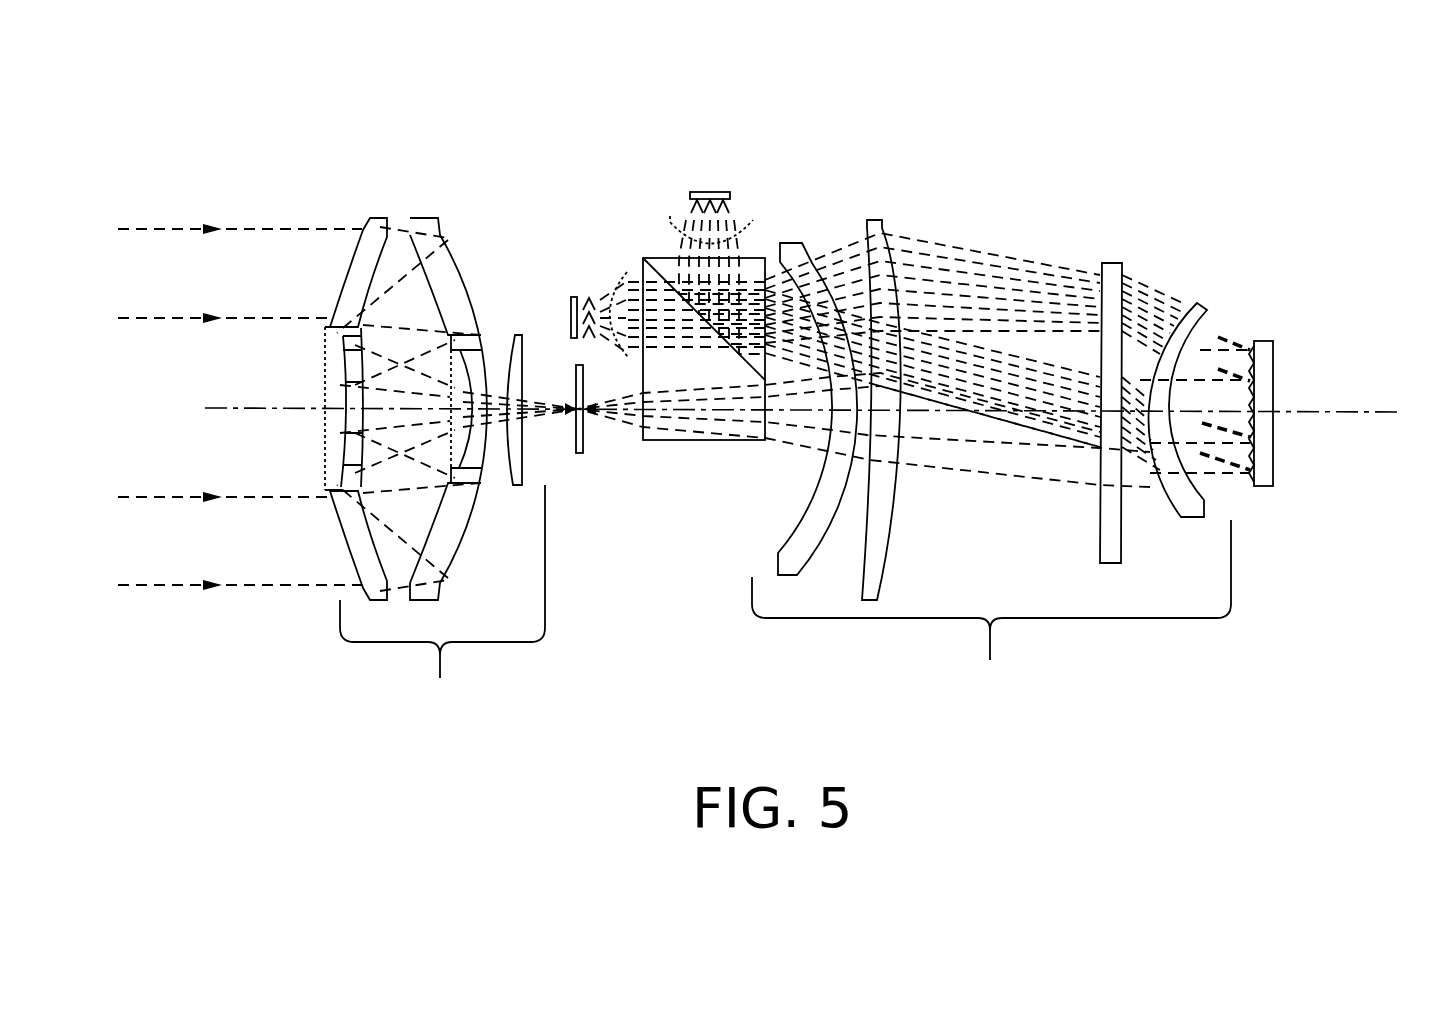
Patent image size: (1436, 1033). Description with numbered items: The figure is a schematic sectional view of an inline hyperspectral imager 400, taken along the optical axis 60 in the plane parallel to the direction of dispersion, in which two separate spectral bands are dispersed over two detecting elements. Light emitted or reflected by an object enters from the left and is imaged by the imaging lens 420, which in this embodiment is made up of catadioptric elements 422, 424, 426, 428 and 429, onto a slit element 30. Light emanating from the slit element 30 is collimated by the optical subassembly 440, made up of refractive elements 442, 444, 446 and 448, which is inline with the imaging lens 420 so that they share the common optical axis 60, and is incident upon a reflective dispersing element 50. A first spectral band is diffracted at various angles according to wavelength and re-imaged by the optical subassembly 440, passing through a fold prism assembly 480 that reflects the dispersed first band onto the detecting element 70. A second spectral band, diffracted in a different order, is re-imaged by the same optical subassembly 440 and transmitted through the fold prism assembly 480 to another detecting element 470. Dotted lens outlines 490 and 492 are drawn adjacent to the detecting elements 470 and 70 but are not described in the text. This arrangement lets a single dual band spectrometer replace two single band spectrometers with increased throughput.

The inline hyperspectral imager 400 is at (262, 150).
The optical axis 60 is at (261, 407).
The imaging lens 420 is at (396, 430).
The catadioptric element 422 is at (377, 227).
The catadioptric element 424 is at (430, 227).
The catadioptric element 426 is at (347, 337).
The catadioptric element 428 is at (473, 363).
The catadioptric element 429 is at (513, 478).
The slit element 30 is at (585, 435).
The detecting element 470 is at (573, 290).
The collimating lens 490 is at (627, 270).
The collimating lens 492 is at (672, 227).
The detecting element 70 is at (713, 190).
The fold prism assembly 480 is at (757, 257).
The optical subassembly 440 is at (1002, 421).
The refractive element 442 is at (788, 252).
The refractive element 444 is at (873, 230).
The refractive element 446 is at (1110, 270).
The refractive element 448 is at (1205, 310).
The reflective dispersing element 50 is at (1274, 367).